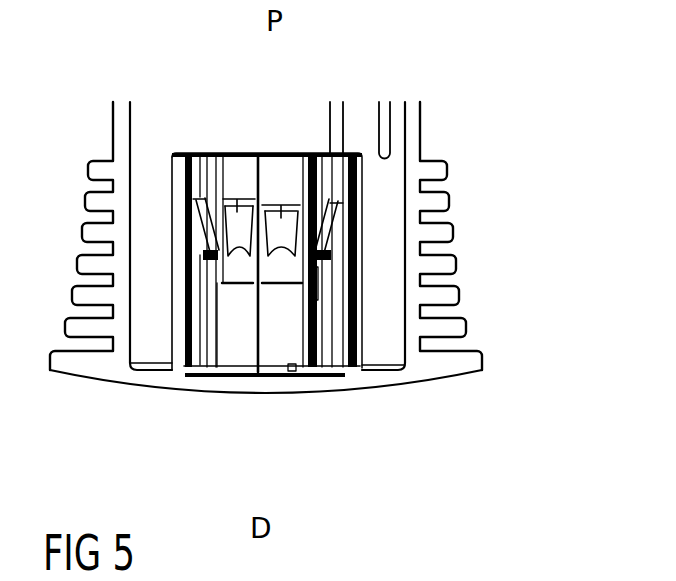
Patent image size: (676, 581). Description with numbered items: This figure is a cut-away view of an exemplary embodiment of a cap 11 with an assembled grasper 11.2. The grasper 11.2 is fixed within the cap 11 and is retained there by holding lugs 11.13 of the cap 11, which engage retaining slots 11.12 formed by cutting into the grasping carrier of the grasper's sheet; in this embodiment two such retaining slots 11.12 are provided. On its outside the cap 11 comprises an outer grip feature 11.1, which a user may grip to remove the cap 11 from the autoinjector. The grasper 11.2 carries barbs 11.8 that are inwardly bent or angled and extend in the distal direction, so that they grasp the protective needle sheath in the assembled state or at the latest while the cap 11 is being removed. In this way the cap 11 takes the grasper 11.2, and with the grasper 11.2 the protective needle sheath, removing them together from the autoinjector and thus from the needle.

The cap 11 is at (322, 245).
The outer grip feature 11.1 is at (462, 295).
The grasper 11.2 is at (292, 283).
The barbs 11.8 is at (282, 200).
The retaining slot 11.12 is at (295, 371).
The holding lugs 11.13 is at (312, 300).